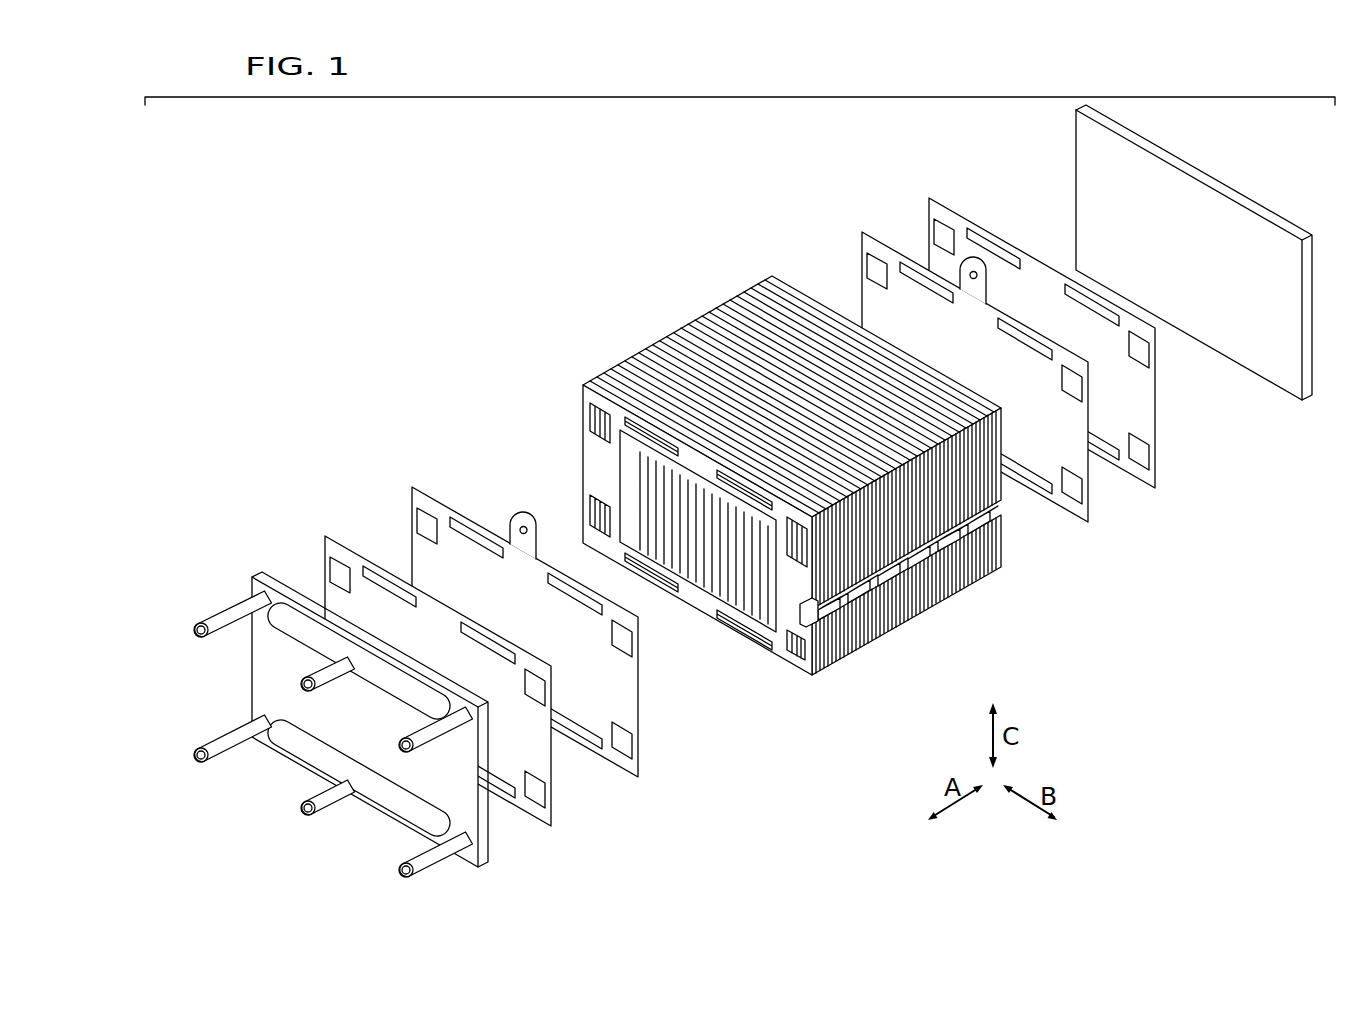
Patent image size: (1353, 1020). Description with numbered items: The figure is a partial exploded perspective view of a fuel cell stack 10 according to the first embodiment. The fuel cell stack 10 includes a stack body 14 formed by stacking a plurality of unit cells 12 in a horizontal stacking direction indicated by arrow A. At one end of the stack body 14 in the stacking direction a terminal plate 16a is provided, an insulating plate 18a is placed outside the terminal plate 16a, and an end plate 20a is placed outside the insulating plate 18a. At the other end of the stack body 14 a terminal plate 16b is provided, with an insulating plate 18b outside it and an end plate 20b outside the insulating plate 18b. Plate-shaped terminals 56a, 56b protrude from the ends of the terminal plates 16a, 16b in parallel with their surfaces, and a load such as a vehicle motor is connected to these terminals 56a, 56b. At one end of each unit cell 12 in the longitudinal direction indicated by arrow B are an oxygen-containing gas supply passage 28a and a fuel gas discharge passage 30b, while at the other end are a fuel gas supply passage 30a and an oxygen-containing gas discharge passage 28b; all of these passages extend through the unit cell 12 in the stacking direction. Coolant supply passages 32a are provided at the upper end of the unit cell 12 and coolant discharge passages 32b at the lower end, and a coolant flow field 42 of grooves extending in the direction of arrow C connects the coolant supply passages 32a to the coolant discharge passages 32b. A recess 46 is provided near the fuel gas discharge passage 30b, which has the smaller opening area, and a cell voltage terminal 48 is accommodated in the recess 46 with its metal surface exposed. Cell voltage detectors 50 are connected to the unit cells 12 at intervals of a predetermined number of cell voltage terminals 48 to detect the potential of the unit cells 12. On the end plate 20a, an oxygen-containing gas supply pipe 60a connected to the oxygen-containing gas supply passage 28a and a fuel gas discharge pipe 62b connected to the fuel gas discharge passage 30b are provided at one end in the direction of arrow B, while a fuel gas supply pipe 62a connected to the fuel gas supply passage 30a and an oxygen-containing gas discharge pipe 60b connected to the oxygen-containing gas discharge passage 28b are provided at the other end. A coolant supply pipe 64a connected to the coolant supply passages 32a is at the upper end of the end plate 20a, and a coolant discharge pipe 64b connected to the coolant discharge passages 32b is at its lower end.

The fuel cell stack 10 is at (502, 177).
The unit cell 12 is at (640, 352).
The stack body 14 is at (565, 318).
The terminal plate 16a is at (418, 498).
The terminal plate 16b is at (877, 252).
The insulating plate 18a is at (330, 546).
The insulating plate 18b is at (956, 218).
The end plate 20a is at (316, 752).
The end plate 20b is at (1190, 166).
The oxygen-containing gas supply passage 28a is at (818, 605).
The oxygen-containing gas discharge passage 28b is at (590, 515).
The fuel gas supply passage 30a is at (590, 420).
The fuel gas discharge passage 30b is at (800, 652).
The coolant supply passage 32a is at (652, 438).
The coolant discharge passage 32b is at (748, 630).
The coolant flow field 42 is at (707, 568).
The recess 46 is at (803, 628).
The cell voltage terminal 48 is at (912, 626).
The cell voltage detector 50 is at (925, 560).
The terminal 56a is at (512, 520).
The terminal 56b is at (987, 281).
The oxygen-containing gas supply pipe 60a is at (438, 742).
The oxygen-containing gas discharge pipe 60b is at (208, 748).
The fuel gas supply pipe 62a is at (218, 609).
The fuel gas discharge pipe 62b is at (408, 872).
The coolant supply pipe 64a is at (330, 690).
The coolant discharge pipe 64b is at (323, 818).